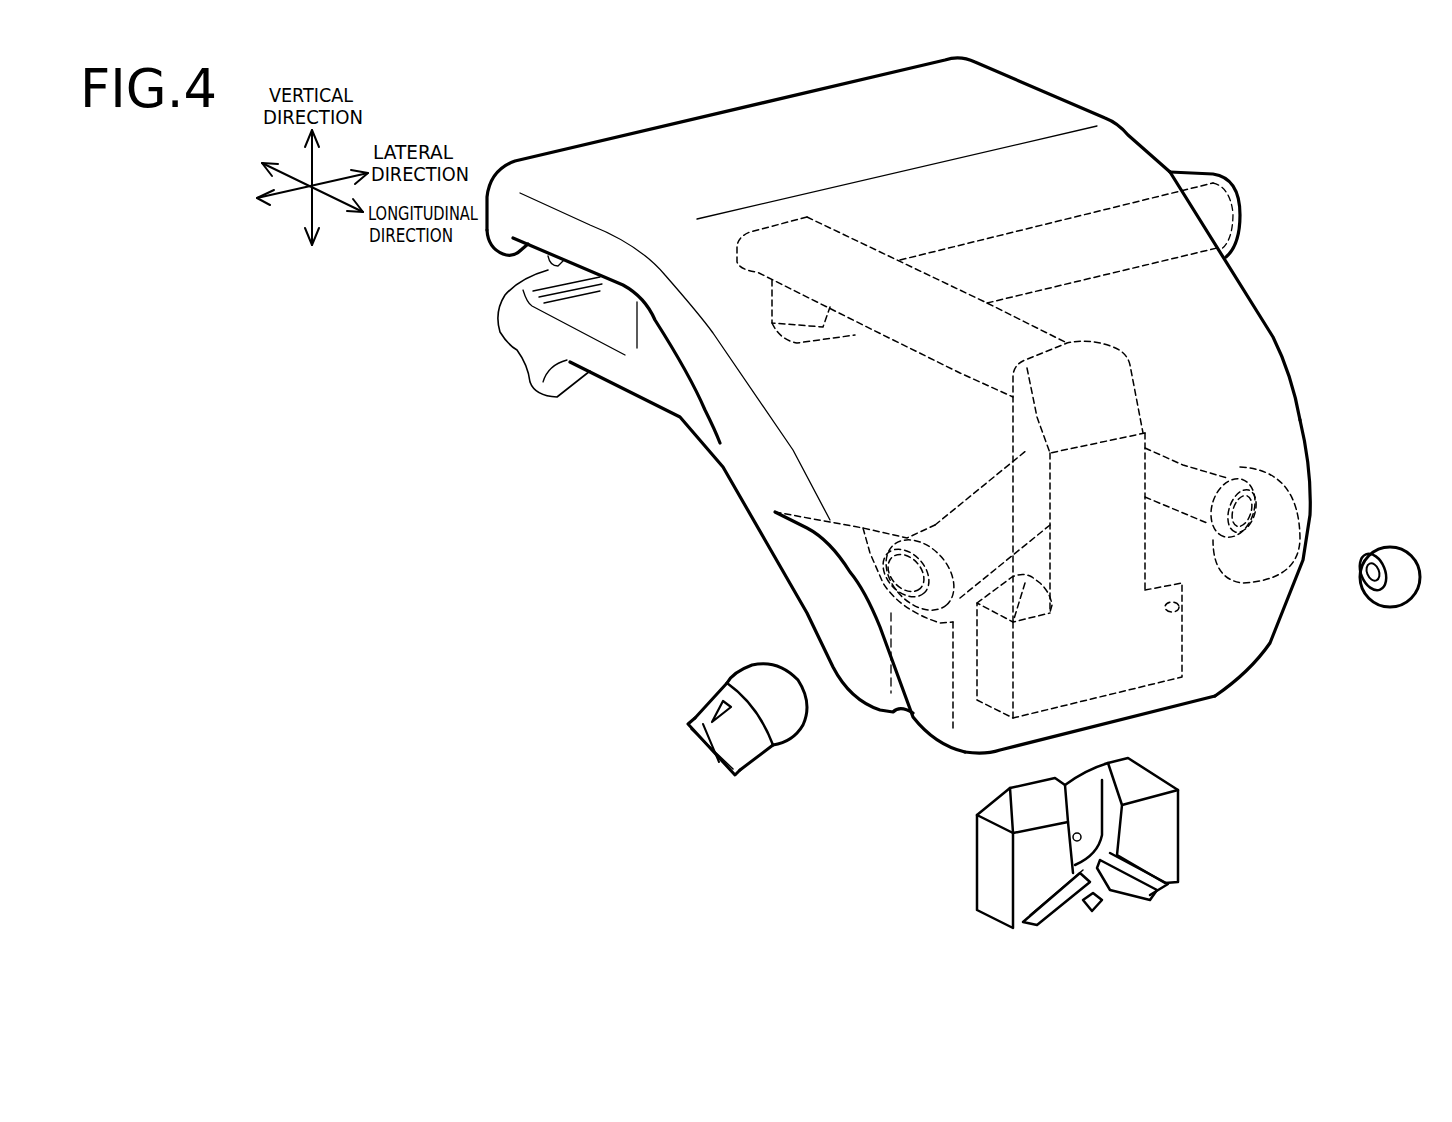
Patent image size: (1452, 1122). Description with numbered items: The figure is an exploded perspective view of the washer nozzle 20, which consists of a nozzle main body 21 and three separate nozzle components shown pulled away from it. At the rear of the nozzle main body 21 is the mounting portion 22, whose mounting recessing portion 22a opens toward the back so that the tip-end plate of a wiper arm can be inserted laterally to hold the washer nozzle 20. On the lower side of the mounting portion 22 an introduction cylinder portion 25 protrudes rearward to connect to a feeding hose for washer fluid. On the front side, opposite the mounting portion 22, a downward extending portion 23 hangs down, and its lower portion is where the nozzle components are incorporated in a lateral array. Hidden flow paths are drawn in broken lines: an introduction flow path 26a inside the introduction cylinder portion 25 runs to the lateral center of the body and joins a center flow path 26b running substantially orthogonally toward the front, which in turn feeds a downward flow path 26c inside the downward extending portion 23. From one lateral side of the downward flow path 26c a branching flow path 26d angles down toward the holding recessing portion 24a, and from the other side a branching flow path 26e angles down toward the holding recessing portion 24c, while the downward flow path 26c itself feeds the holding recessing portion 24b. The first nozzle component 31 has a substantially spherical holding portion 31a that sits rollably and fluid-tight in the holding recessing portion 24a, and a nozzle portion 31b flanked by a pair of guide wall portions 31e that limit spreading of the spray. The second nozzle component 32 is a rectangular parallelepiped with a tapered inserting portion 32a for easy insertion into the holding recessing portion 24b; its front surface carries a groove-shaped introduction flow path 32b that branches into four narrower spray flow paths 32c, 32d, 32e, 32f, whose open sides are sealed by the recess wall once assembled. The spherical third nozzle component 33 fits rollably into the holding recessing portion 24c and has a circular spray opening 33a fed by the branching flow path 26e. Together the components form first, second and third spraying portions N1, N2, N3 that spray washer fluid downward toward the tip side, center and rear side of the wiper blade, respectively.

The washer nozzle 20 is at (1204, 107).
The nozzle main body 21 is at (1022, 76).
The mounting portion 22 is at (730, 127).
The mounting recessing portion 22a is at (557, 260).
The downward extending portion 23 is at (1255, 350).
The introduction cylinder portion 25 is at (1193, 172).
The introduction flow path 26a is at (1043, 227).
The center flow path 26b is at (935, 354).
The downward flow path 26c is at (1053, 520).
The branching flow path 26d is at (973, 493).
The branching flow path 26e is at (1180, 467).
The holding recessing portion 24a is at (900, 533).
The holding recessing portion 24b is at (1183, 608).
The holding recessing portion 24c is at (1220, 537).
The first spraying portion N1 is at (775, 558).
The second spraying portion N2 is at (1197, 701).
The third spraying portion N3 is at (1311, 512).
The first nozzle component 31 is at (790, 612).
The holding portion 31a is at (757, 670).
The nozzle portion 31b is at (723, 690).
The guide wall portions 31e is at (703, 749).
The second nozzle component 32 is at (1165, 855).
The inserting portion 32a is at (1002, 805).
The introduction flow path 32b is at (1072, 837).
The spray flow path 32c is at (1037, 920).
The spray flow path 32d is at (1088, 903).
The spray flow path 32e is at (1112, 897).
The spray flow path 32f is at (1162, 890).
The third nozzle component 33 is at (1400, 555).
The spray opening 33a is at (1370, 590).